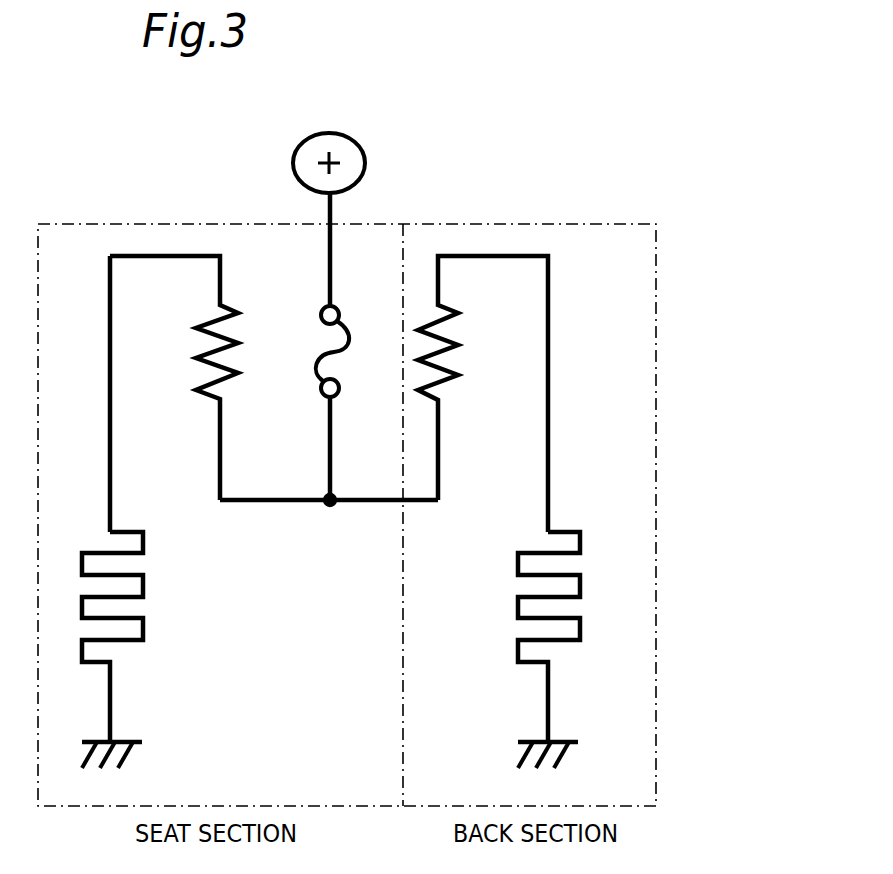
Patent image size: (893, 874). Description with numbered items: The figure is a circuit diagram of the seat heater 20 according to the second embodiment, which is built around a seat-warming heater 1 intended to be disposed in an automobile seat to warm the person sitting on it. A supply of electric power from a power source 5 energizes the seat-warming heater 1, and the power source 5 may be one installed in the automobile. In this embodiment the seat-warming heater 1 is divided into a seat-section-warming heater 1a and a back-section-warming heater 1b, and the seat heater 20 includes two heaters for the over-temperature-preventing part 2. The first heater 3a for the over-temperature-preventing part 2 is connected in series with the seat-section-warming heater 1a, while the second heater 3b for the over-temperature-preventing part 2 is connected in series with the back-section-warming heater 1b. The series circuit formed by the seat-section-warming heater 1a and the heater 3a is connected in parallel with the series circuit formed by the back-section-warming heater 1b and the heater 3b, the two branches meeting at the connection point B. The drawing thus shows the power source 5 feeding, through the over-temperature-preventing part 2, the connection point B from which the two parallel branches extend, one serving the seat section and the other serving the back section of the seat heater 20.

The seat-warming heater 1 is at (331, 650).
The seat-section-warming heater 1a is at (145, 592).
The back-section-warming heater 1b is at (517, 608).
The over-temperature-preventing part 2 is at (358, 326).
The first heater for the over-temperature-preventing part 3a is at (192, 315).
The second heater for the over-temperature-preventing part 3b is at (470, 318).
The power source 5 is at (365, 163).
The seat heater 20 is at (700, 282).
The connection point B is at (328, 506).